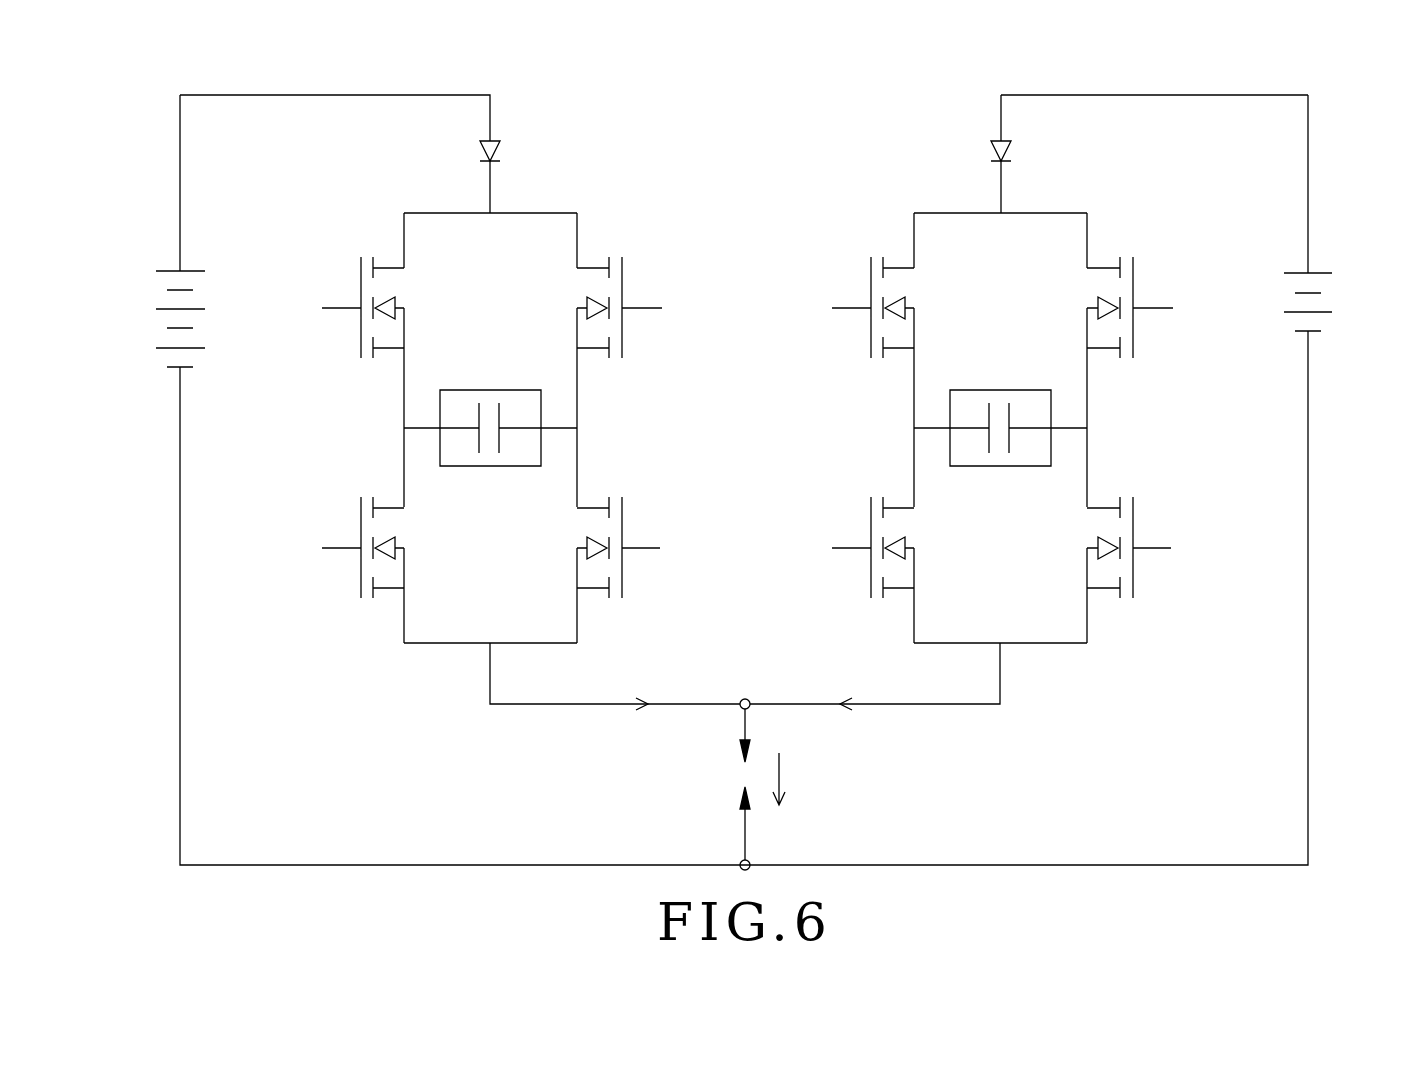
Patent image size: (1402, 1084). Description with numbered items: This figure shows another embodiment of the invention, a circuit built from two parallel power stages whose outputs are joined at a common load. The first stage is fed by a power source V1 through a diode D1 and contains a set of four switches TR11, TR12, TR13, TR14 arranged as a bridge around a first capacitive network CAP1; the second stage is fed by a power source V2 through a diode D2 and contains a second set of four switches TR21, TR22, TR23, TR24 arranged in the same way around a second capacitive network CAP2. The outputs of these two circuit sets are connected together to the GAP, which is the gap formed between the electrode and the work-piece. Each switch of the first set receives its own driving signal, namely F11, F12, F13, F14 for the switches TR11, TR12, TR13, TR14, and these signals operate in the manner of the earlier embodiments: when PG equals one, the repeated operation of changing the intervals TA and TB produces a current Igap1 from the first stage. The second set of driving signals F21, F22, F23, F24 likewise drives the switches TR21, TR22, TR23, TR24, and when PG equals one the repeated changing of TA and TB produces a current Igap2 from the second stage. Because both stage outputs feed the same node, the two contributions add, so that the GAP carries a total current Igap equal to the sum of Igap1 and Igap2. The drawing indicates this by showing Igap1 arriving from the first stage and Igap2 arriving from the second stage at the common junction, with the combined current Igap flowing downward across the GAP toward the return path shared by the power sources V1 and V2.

The diode D1 is at (498, 152).
The diode D2 is at (1009, 152).
The power source V1 is at (165, 272).
The power source V2 is at (1322, 276).
The switch TR11 is at (358, 267).
The switch TR12 is at (357, 508).
The switch TR13 is at (623, 265).
The switch TR14 is at (653, 490).
The switch TR21 is at (868, 267).
The switch TR22 is at (867, 508).
The switch TR23 is at (1135, 270).
The switch TR24 is at (1164, 490).
The driving signal F11 is at (318, 309).
The driving signal F12 is at (318, 550).
The driving signal F13 is at (670, 310).
The driving signal F14 is at (668, 550).
The driving signal F21 is at (828, 309).
The driving signal F22 is at (827, 550).
The driving signal F23 is at (1182, 310).
The driving signal F24 is at (1179, 550).
The capacitive network CAP1 is at (516, 390).
The capacitive network CAP2 is at (1026, 390).
The gap GAP is at (745, 773).
The gap current Igap1 is at (629, 669).
The gap current Igap2 is at (855, 744).
The gap current Igap is at (810, 779).